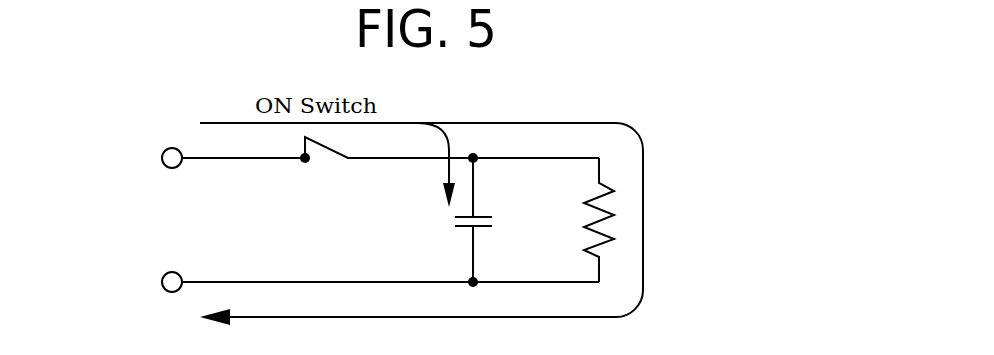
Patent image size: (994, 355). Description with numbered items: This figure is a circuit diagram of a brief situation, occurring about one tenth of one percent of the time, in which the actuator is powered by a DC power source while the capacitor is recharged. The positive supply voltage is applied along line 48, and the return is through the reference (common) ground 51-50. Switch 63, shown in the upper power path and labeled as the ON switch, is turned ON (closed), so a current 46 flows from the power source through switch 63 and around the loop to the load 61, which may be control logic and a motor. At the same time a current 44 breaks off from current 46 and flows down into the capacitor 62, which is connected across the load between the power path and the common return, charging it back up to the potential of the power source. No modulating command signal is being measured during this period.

The current 46 is at (225, 122).
The line 48 is at (226, 160).
The switch 63 is at (325, 153).
The current 44 is at (445, 170).
The capacitor 62 is at (454, 217).
The load 61 is at (582, 215).
The reference (common) ground 51-50 is at (280, 280).